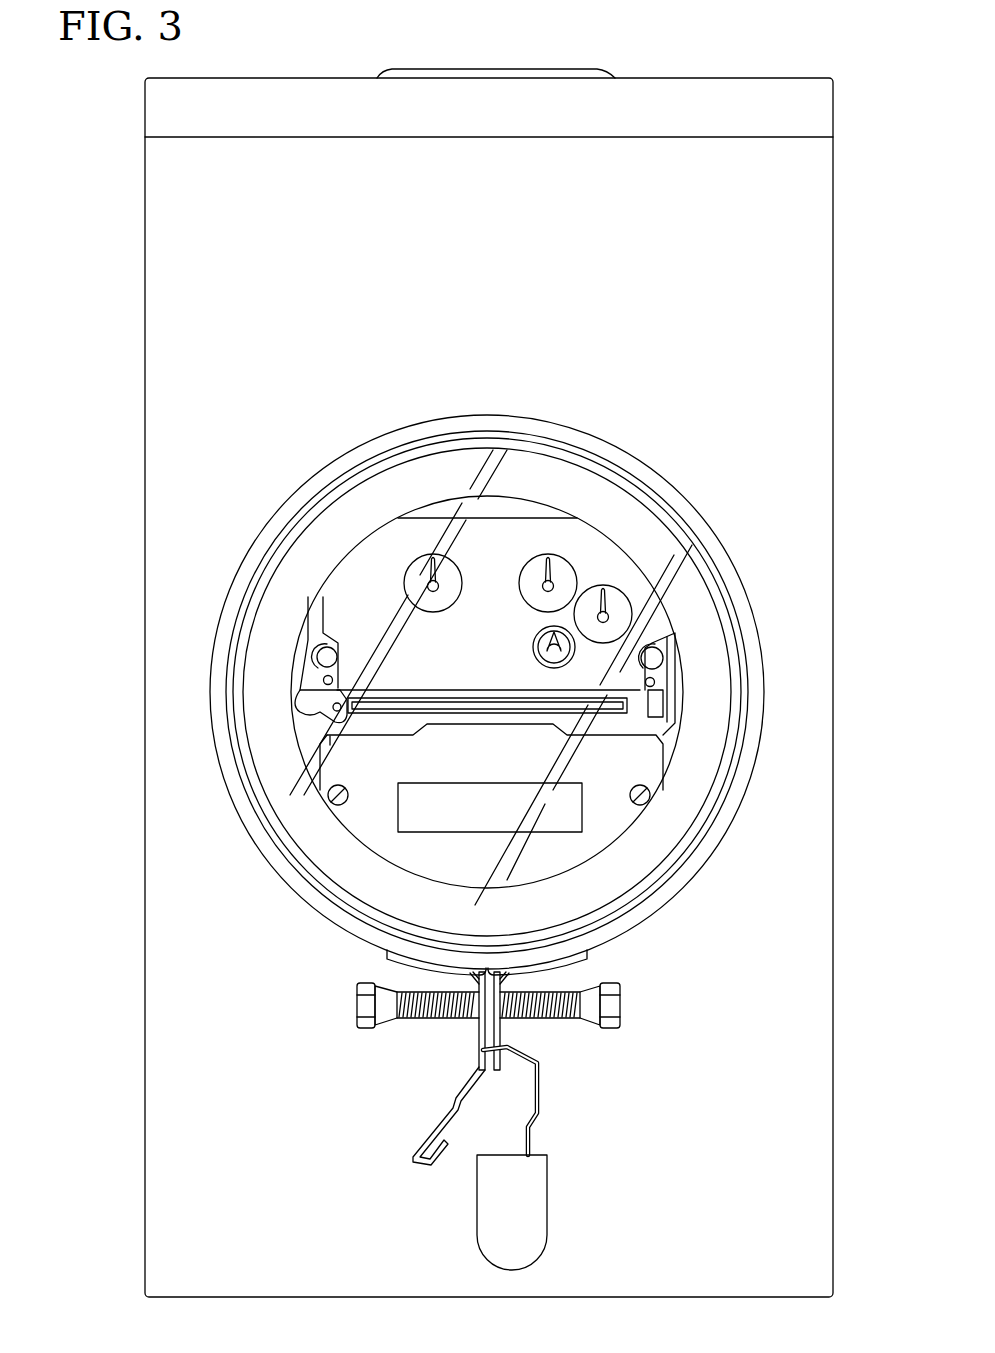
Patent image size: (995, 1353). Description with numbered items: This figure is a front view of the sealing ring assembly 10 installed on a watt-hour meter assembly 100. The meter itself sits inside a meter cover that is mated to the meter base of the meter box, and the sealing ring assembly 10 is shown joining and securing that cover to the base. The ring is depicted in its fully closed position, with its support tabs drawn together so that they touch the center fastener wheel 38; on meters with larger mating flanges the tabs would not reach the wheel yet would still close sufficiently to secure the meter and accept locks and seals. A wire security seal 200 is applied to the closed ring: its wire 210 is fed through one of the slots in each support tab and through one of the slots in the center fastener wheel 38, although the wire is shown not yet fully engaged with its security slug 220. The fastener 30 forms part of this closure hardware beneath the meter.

The watt-hour meter assembly 100 is at (433, 683).
The sealing ring assembly 10 is at (487, 685).
The threaded bolt 30 is at (547, 975).
The center fastener wheel 38 is at (448, 1024).
The wire security seal 200 is at (508, 1158).
The wire 210 is at (573, 1101).
The security slug 220 is at (589, 1212).